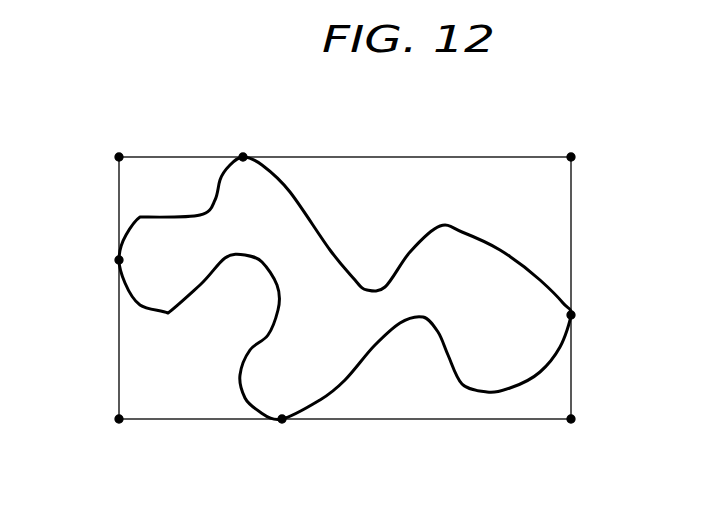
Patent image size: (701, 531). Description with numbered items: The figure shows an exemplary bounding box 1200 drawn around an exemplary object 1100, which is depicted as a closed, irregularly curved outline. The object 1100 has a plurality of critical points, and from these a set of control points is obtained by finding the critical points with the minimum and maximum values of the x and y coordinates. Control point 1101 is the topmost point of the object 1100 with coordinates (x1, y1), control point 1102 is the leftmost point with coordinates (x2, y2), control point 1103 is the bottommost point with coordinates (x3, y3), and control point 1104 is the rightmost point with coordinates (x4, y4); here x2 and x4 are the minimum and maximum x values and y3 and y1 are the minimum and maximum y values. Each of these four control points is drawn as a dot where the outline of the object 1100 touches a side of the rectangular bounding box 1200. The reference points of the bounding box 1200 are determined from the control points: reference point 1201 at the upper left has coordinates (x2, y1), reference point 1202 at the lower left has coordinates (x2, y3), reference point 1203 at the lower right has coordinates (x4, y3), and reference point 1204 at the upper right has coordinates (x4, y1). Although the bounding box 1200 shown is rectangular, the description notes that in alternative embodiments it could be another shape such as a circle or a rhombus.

The object 1100 is at (478, 238).
The bounding box 1200 is at (403, 157).
The control point 1101 is at (243, 153).
The control point 1102 is at (114, 260).
The control point 1103 is at (282, 424).
The control point 1104 is at (576, 317).
The reference point 1201 is at (119, 153).
The reference point 1202 is at (119, 424).
The reference point 1203 is at (571, 424).
The reference point 1204 is at (571, 153).